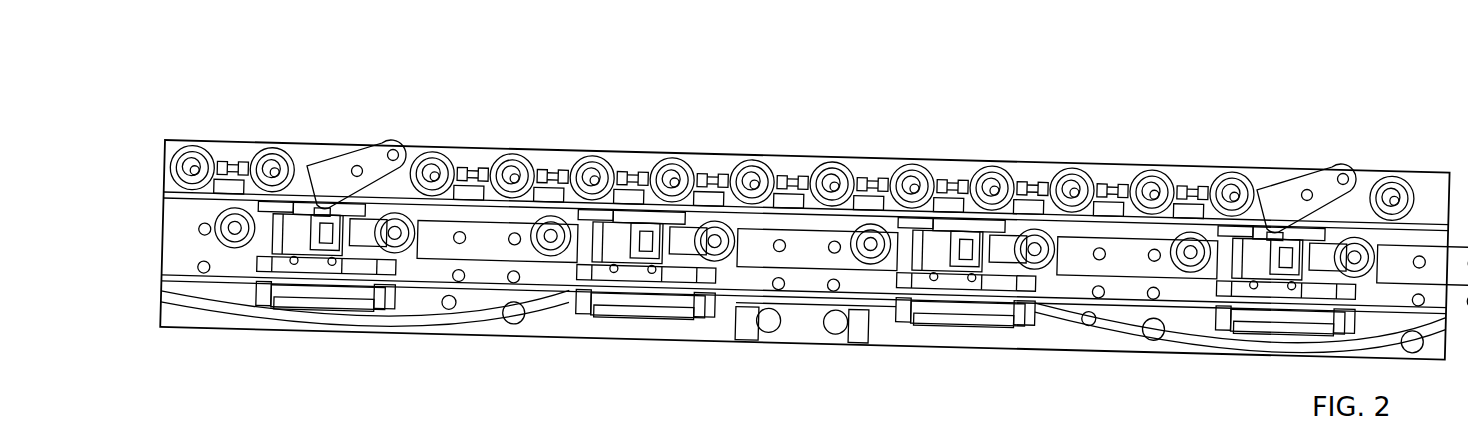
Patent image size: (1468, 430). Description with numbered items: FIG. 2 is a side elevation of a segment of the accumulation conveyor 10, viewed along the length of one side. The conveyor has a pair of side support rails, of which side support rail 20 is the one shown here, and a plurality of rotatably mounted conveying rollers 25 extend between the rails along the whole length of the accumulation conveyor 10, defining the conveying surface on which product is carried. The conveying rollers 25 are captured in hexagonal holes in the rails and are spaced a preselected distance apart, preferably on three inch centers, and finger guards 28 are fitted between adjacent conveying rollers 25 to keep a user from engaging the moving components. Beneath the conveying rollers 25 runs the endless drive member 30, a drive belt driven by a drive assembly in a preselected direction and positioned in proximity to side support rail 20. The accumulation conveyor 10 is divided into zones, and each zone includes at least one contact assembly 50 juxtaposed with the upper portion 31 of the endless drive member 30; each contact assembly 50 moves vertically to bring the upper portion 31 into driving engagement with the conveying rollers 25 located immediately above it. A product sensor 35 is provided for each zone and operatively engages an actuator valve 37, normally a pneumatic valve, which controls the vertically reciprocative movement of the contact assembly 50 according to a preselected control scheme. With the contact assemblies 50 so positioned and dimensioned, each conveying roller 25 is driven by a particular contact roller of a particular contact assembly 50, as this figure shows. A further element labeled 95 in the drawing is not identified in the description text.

The accumulation conveyor 10 is at (537, 88).
The side support rail 20 is at (633, 160).
The conveying rollers 25 is at (273, 140).
The finger guards 28 is at (873, 180).
The endless drive member 30 is at (483, 205).
The upper portion of endless drive member 31 is at (720, 178).
The product sensor 35 is at (381, 141).
The actuator valve 37 is at (328, 204).
The contact assembly 50 is at (298, 237).
The belt 95 is at (412, 315).